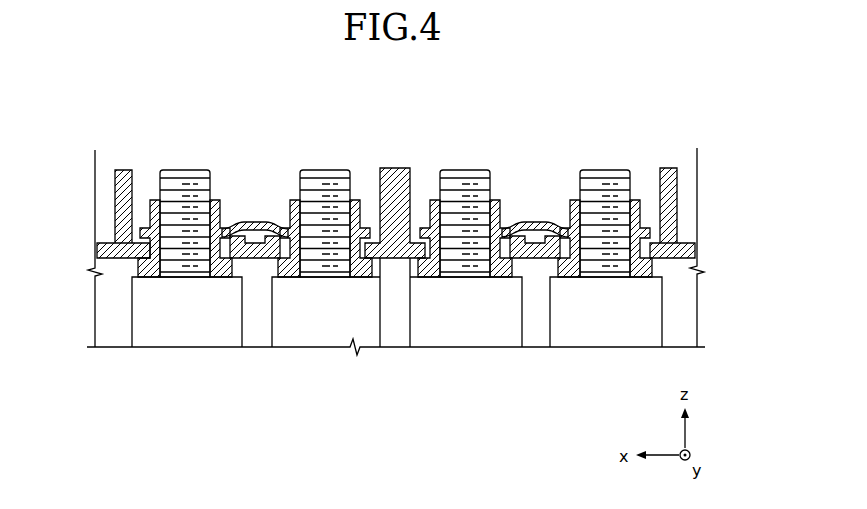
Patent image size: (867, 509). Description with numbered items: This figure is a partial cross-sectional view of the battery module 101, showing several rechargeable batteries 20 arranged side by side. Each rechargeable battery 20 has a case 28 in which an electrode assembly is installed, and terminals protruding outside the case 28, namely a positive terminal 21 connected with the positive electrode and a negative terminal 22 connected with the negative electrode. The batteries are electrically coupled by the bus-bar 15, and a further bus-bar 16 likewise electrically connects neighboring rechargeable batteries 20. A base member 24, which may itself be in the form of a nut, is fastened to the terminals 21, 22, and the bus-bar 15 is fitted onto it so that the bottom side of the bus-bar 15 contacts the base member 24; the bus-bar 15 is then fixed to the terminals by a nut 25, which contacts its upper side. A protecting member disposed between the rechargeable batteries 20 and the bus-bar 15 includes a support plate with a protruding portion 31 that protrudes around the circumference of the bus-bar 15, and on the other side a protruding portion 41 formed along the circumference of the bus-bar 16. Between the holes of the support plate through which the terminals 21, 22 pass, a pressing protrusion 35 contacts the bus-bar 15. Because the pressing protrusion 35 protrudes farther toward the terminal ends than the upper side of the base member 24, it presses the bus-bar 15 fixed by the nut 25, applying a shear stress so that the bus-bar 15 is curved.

The battery module 101 is at (407, 96).
The rechargeable battery 20 is at (129, 319).
The case 28 is at (199, 320).
The protruding portion 31 is at (123, 195).
The protruding portion 41 is at (672, 195).
The base member 24 is at (138, 249).
The bus-bar 15 is at (262, 221).
The bus-bar 16 is at (541, 221).
The positive terminal 21 is at (187, 169).
The negative terminal 22 is at (321, 169).
The nut 25 is at (157, 199).
The pressing protrusion 35 is at (229, 229).